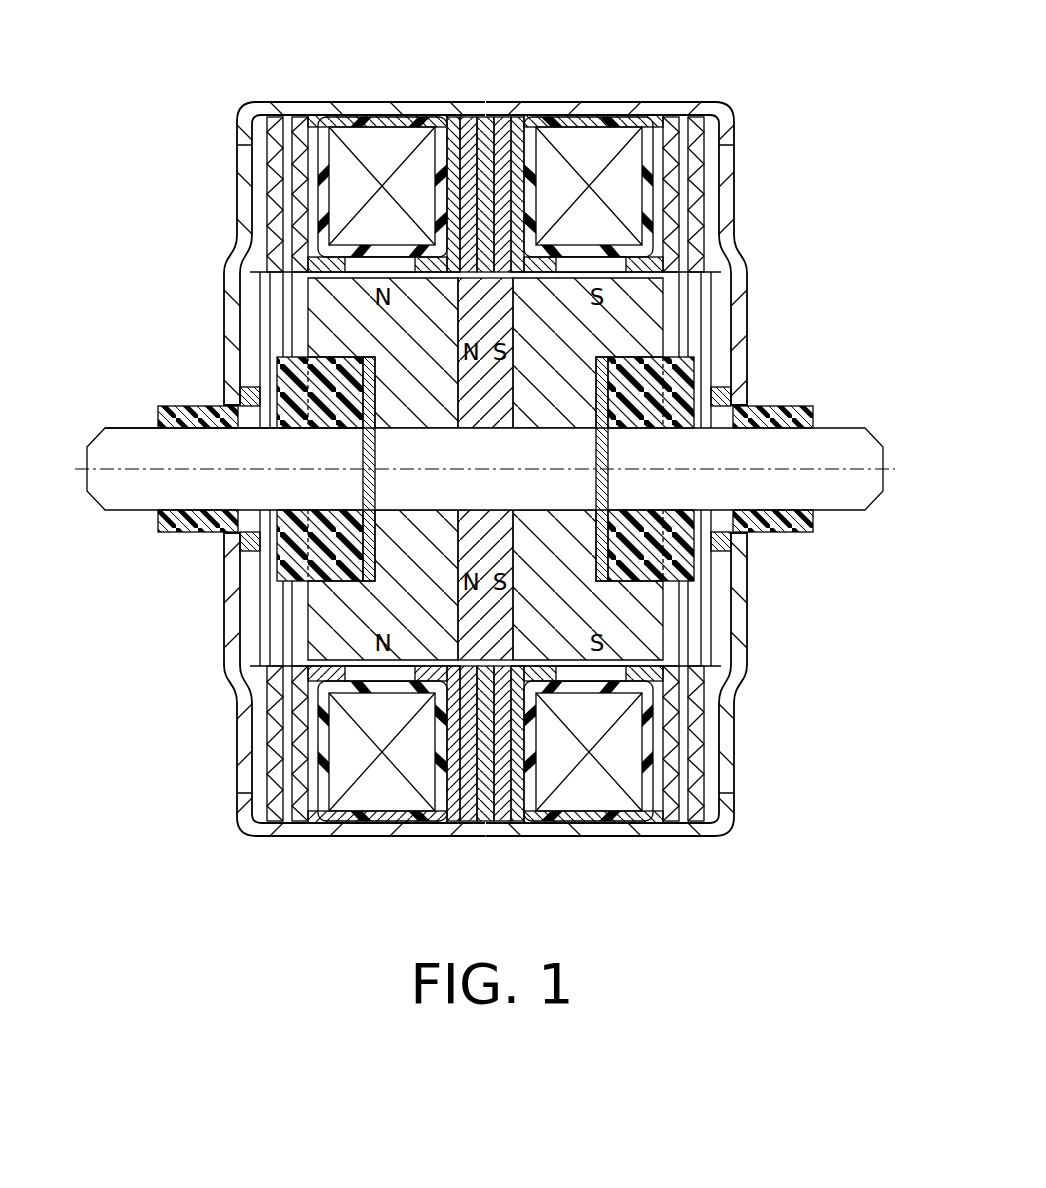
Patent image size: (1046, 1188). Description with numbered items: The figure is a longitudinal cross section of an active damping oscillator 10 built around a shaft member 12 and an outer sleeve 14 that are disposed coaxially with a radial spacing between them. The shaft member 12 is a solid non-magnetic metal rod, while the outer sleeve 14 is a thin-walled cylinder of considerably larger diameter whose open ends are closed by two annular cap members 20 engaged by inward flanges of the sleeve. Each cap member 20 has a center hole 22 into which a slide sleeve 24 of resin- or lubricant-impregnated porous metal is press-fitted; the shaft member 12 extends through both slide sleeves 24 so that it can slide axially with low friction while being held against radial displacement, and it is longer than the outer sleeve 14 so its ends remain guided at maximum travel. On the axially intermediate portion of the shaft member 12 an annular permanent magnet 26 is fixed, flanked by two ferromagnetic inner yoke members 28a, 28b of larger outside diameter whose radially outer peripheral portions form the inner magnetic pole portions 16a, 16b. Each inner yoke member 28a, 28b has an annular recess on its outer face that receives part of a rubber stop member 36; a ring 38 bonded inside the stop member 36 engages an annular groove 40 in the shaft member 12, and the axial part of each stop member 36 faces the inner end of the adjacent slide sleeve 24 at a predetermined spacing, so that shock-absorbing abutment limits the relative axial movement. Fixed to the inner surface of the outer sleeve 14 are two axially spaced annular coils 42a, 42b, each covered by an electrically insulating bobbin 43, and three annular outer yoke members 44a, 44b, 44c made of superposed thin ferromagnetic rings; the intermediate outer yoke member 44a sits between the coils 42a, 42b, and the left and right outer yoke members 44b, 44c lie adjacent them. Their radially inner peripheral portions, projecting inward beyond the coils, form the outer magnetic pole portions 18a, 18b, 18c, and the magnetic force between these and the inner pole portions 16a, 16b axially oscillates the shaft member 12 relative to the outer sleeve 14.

The active damping oscillator 10 is at (752, 74).
The shaft member 12 is at (130, 510).
The outer sleeve 14 is at (425, 838).
The inner magnetic pole portion 16a is at (358, 280).
The inner magnetic pole portion 16b is at (552, 152).
The outer magnetic pole portion 18a is at (680, 295).
The outer magnetic pole portion 18b is at (262, 290).
The outer magnetic pole portion 18c is at (690, 240).
The cap member 20 is at (228, 612).
The center hole 22 is at (242, 540).
The slide sleeve 24 is at (185, 410).
The permanent magnet 26 is at (510, 614).
The inner yoke member 28a is at (330, 615).
The inner yoke member 28b is at (620, 325).
The rubber stop member 36 is at (285, 373).
The ring 38 is at (300, 355).
The annular groove 40 is at (363, 448).
The coil 42a is at (352, 122).
The coil 42b is at (600, 140).
The bobbin 43 is at (425, 122).
The intermediate outer yoke member 44a is at (488, 836).
The left outer yoke member 44b is at (291, 836).
The right outer yoke member 44c is at (692, 836).